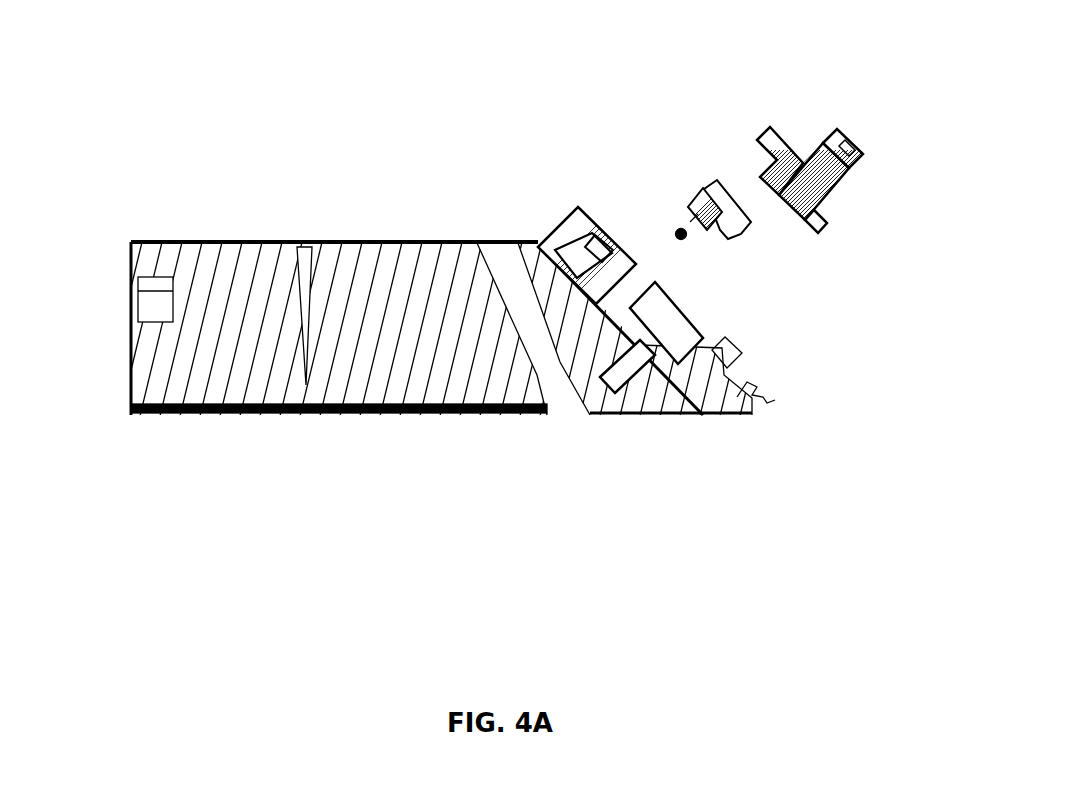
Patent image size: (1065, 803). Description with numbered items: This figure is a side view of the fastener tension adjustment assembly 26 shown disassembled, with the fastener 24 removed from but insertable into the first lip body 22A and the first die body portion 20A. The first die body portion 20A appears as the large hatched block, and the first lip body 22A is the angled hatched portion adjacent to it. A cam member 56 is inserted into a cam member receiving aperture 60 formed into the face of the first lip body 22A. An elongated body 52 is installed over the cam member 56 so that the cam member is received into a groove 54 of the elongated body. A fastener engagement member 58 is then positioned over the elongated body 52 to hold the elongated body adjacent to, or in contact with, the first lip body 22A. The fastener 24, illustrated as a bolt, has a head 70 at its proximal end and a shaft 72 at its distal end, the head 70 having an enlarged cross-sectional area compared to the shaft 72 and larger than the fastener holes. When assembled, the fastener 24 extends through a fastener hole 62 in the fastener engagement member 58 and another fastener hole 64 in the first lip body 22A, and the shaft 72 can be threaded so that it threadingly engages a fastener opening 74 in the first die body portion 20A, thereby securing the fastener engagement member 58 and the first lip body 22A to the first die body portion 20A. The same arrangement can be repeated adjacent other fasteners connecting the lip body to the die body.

The first die body portion 20A is at (410, 417).
The first lip body 22A is at (723, 417).
The fastener 24 is at (848, 133).
The fastener tension adjustment assembly 26 is at (805, 316).
The elongated body 52 is at (688, 193).
The groove 54 is at (693, 217).
The cam member 56 is at (670, 227).
The fastener engagement member 58 is at (759, 124).
The cam member receiving aperture 60 is at (583, 292).
The fastener hole 62 is at (778, 200).
The fastener hole 64 is at (637, 320).
The head 70 is at (858, 172).
The shaft 72 is at (835, 217).
The fastener opening 74 is at (606, 366).